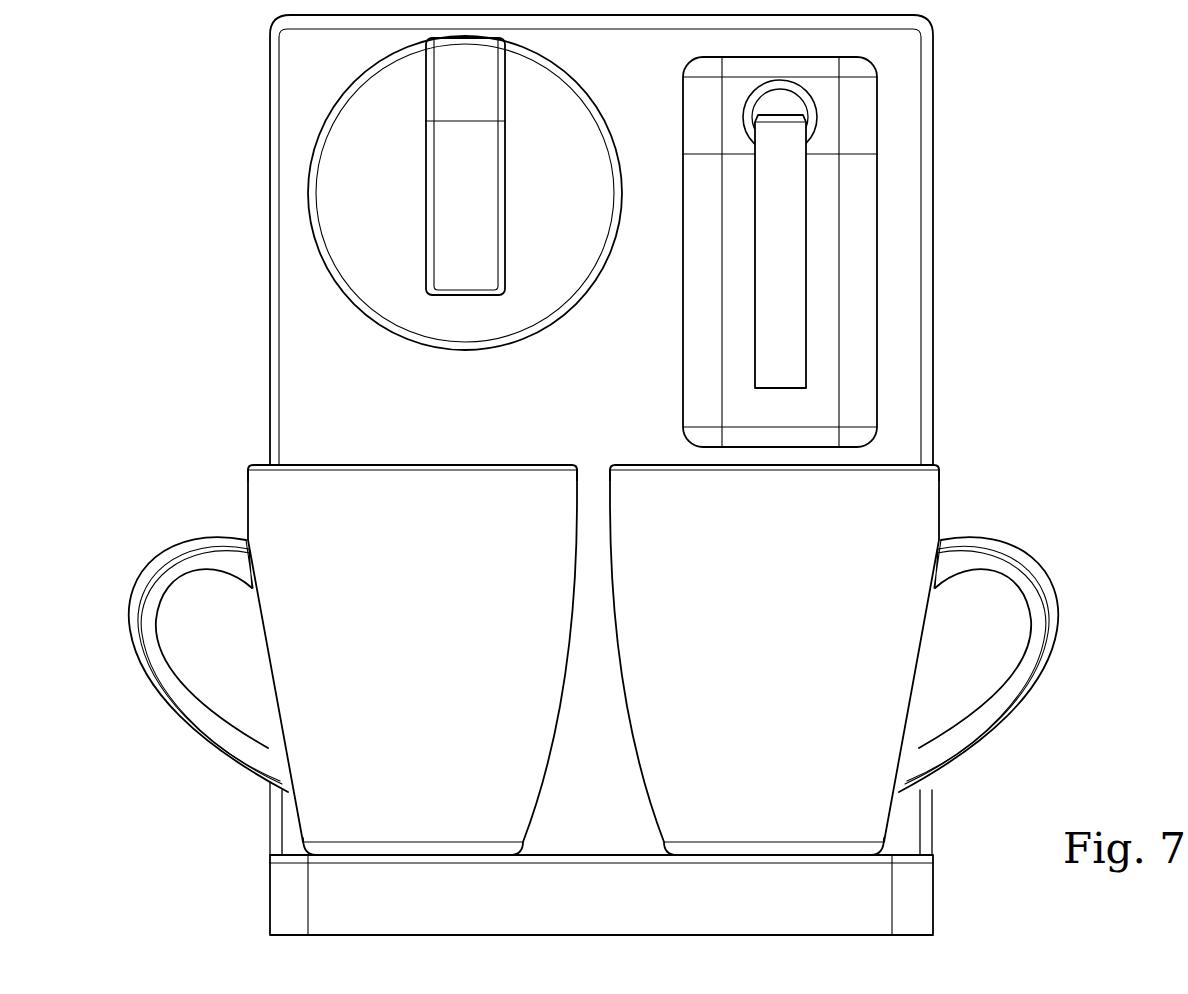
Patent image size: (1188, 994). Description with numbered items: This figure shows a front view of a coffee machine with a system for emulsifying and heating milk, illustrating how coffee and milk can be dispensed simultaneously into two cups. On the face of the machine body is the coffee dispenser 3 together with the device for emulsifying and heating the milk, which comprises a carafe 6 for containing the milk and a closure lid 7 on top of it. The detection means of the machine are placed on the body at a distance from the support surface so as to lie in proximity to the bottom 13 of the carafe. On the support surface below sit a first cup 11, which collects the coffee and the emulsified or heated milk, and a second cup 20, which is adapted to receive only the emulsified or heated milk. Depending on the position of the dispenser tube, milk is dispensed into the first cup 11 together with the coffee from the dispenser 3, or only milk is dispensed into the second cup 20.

The coffee dispenser 3 is at (467, 252).
The carafe 6 is at (840, 242).
The closure lid 7 is at (860, 108).
The bottom of the carafe 13 is at (782, 338).
The first cup 11 is at (415, 762).
The second cup 20 is at (893, 523).